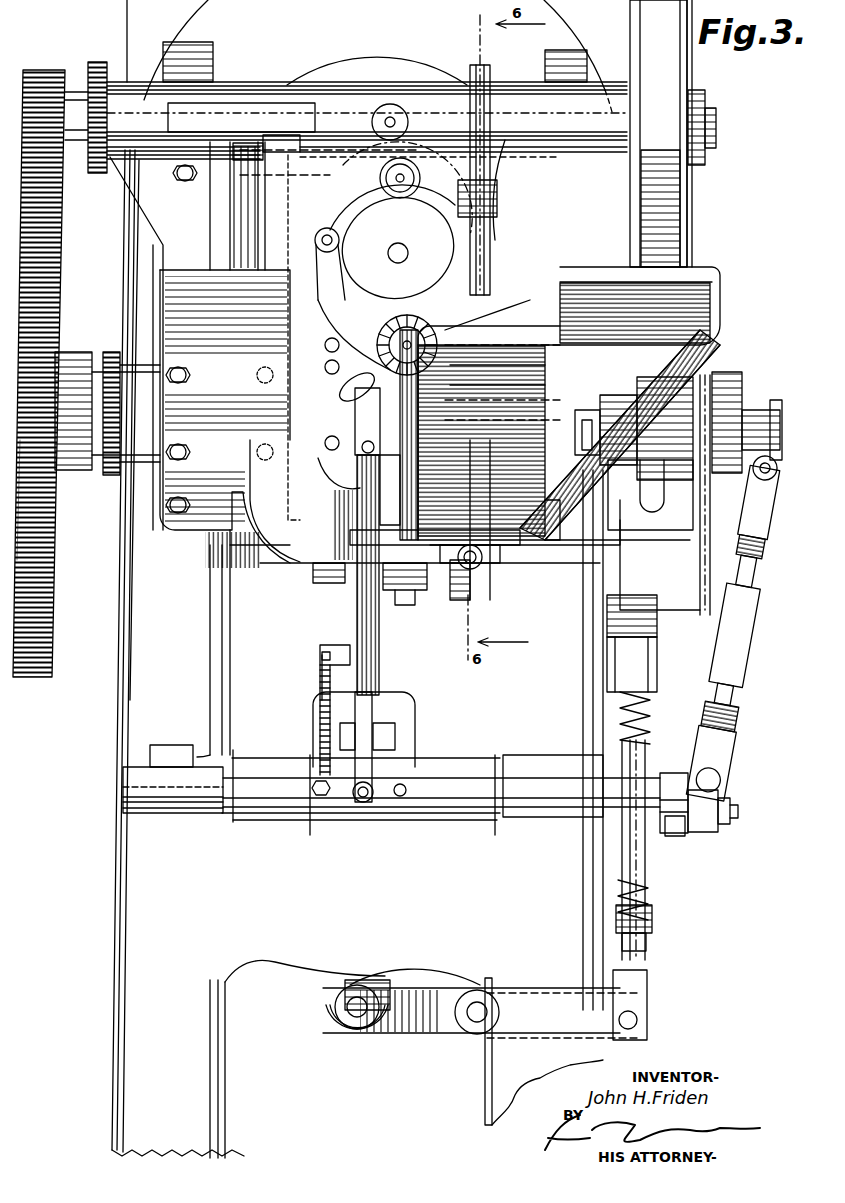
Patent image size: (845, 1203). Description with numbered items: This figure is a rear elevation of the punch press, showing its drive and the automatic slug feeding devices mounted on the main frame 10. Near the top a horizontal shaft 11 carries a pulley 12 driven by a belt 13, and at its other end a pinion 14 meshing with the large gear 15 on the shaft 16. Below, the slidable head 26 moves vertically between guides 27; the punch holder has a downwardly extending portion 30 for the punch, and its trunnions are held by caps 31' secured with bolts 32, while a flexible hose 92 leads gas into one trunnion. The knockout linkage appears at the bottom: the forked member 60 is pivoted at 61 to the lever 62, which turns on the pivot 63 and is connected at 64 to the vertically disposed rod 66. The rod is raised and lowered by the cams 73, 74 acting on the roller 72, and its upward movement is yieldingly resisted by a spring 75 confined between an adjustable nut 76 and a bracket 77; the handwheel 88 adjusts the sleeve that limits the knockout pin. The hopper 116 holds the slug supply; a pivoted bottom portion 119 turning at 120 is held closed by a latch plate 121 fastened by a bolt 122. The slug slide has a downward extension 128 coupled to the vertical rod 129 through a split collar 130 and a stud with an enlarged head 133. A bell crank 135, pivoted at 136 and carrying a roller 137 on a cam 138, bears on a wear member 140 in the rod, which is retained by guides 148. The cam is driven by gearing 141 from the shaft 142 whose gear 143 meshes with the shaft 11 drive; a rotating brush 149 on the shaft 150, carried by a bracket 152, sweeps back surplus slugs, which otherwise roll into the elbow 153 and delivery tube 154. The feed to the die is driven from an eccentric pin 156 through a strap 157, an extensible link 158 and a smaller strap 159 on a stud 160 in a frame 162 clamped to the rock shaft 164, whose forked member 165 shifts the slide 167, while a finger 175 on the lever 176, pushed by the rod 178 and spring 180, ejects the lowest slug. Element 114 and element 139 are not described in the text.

The main frame 10 is at (132, 695).
The shaft 11 is at (716, 128).
The pulley 12 is at (694, 72).
The belt 13 is at (672, 188).
The pinion 14 is at (42, 80).
The gear 15 is at (48, 540).
The shaft 16 is at (98, 365).
The slidable head 26 is at (265, 605).
The guides 27 is at (262, 570).
The downwardly extending portion 30 is at (410, 598).
The caps 31' is at (310, 587).
The bolts 32 is at (325, 585).
The forked member 60 is at (372, 980).
The pivotal connection 61 is at (347, 1015).
The lever 62 is at (448, 990).
The pivot 63 is at (482, 1005).
The pivotal connection 64 is at (652, 1023).
The vertically disposed rod 66 is at (625, 848).
The roller 72 is at (645, 485).
The cam 73 is at (695, 380).
The cam 74 is at (585, 520).
The spring 75 is at (652, 896).
The adjustable nut 76 is at (652, 924).
The bracket 77 is at (632, 668).
The handwheel 88 is at (333, 1022).
The flexible hose 92 is at (470, 600).
The plate 114 is at (698, 566).
The hopper 116 is at (705, 312).
The pivoted bottom portion 119 is at (550, 345).
The pivotal connection 120 is at (540, 365).
The latch plate 121 is at (362, 468).
The bolt 122 is at (485, 557).
The downward extension 128 is at (400, 515).
The rod 129 is at (492, 125).
The split collar 130 is at (470, 555).
The enlarged head 133 is at (500, 590).
The bell crank 135 is at (330, 282).
The pivot 136 is at (322, 345).
The roller 137 is at (340, 225).
The cam 138 is at (370, 232).
The link 139 is at (520, 318).
The member 140 is at (497, 240).
The gearing 141 is at (410, 140).
The shaft 142 is at (330, 118).
The gear 143 is at (95, 175).
The guides 148 is at (510, 190).
The rotating brush 149 is at (322, 367).
The shaft 150 is at (418, 318).
The bracket 152 is at (345, 382).
The elbow 153 is at (355, 422).
The delivery tube 154 is at (380, 625).
The eccentric pin 156 is at (790, 420).
The strap 157 is at (765, 478).
The extensible link 158 is at (748, 622).
The strap 159 is at (720, 815).
The stud 160 is at (760, 792).
The frame 162 is at (672, 775).
The rock shaft 164 is at (470, 795).
The forked member 165 is at (395, 722).
The slide 167 is at (375, 735).
The finger 175 is at (350, 660).
The lever 176 is at (320, 640).
The rod 178 is at (320, 656).
The spring 180 is at (318, 672).